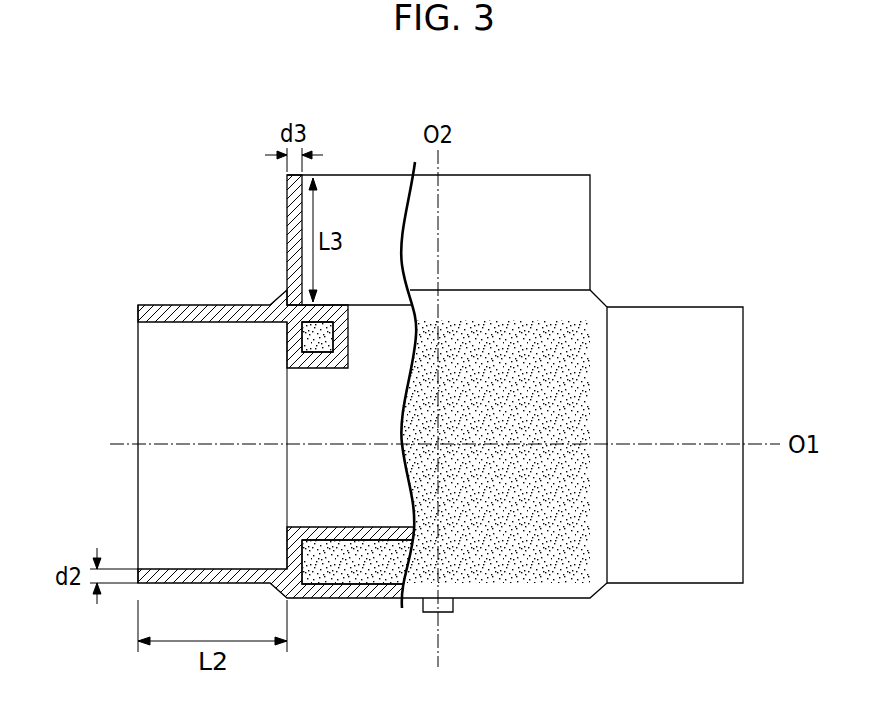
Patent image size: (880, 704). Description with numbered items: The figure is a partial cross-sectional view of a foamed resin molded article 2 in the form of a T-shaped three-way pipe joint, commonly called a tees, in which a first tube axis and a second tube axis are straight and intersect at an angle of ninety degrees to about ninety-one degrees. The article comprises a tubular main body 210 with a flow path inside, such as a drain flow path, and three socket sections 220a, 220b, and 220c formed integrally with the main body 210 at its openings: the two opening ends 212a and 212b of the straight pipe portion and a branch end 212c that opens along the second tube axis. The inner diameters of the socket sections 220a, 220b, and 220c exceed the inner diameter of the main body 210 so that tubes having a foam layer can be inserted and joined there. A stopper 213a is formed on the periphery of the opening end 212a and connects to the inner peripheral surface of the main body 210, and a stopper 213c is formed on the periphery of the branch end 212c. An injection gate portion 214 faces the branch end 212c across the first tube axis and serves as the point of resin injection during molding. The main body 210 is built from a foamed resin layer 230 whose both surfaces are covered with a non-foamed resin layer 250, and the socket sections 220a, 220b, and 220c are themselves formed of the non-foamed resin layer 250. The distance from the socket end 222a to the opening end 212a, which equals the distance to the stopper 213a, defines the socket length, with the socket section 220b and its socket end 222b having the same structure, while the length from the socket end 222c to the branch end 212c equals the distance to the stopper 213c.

The foamed resin molded article 2 is at (701, 194).
The main body 210 is at (546, 606).
The opening end 212a is at (287, 477).
The opening end 212b is at (607, 363).
The branch end 212c is at (403, 268).
The stopper 213a is at (287, 542).
The stopper 213c is at (377, 306).
The injection gate portion 214 is at (448, 613).
The socket section 220a is at (195, 348).
The socket section 220b is at (679, 592).
The socket section 220c is at (278, 211).
The socket end 222a is at (138, 401).
The socket end 222b is at (743, 524).
The socket end 222c is at (557, 175).
The foamed resin layer 230 is at (330, 316).
The non-foamed resin layer 250 is at (320, 316).